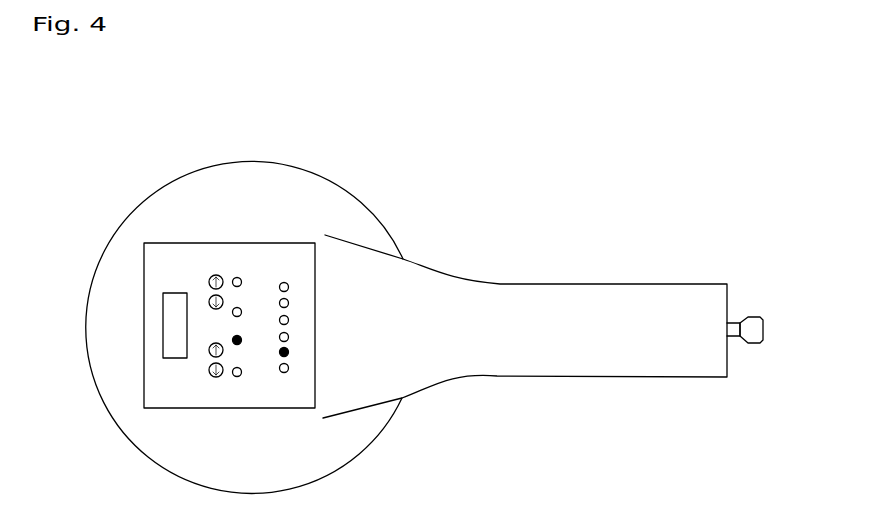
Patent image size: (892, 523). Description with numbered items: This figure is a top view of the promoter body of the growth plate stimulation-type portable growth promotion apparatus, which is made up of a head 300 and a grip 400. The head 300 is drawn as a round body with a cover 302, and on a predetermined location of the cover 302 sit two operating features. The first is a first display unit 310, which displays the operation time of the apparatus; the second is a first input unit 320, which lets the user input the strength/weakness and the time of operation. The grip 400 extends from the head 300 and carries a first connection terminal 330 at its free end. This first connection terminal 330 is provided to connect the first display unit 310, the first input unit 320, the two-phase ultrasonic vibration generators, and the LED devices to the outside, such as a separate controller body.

The head 300 is at (330, 134).
The cover 302 is at (183, 187).
The first display unit 310 is at (160, 286).
The first input unit 320 is at (212, 265).
The first connection terminal 330 is at (751, 338).
The grip 400 is at (678, 276).